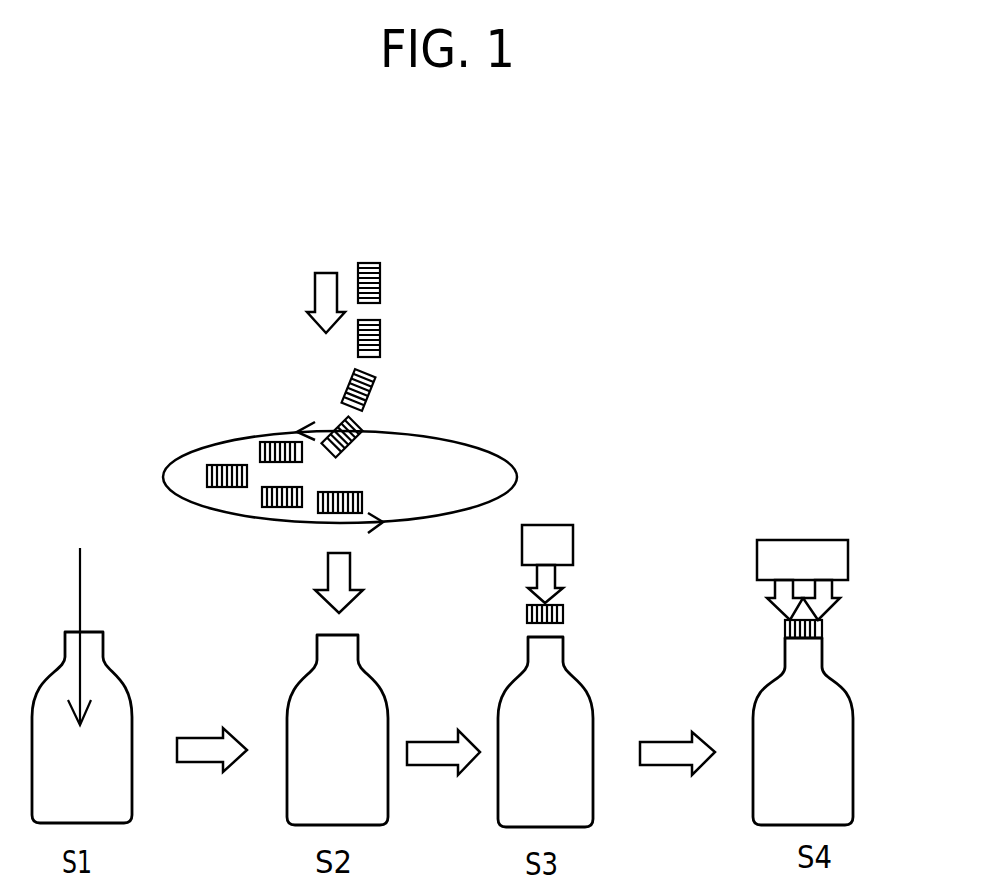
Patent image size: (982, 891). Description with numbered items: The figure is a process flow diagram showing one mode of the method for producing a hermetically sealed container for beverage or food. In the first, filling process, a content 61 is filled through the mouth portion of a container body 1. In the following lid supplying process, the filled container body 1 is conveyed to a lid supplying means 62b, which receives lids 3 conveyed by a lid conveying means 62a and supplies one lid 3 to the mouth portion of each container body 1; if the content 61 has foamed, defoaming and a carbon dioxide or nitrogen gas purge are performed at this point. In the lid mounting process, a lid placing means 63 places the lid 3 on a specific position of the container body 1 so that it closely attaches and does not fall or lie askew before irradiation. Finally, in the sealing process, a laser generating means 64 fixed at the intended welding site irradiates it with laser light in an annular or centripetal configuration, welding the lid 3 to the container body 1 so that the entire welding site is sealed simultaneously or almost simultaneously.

The container body 1 is at (120, 682).
The lid 3 is at (380, 275).
The content 61 is at (83, 585).
The lid conveying means 62a is at (315, 300).
The lid supplying means 62b is at (483, 447).
The lid placing means 63 is at (573, 550).
The laser generating means 64 is at (848, 563).